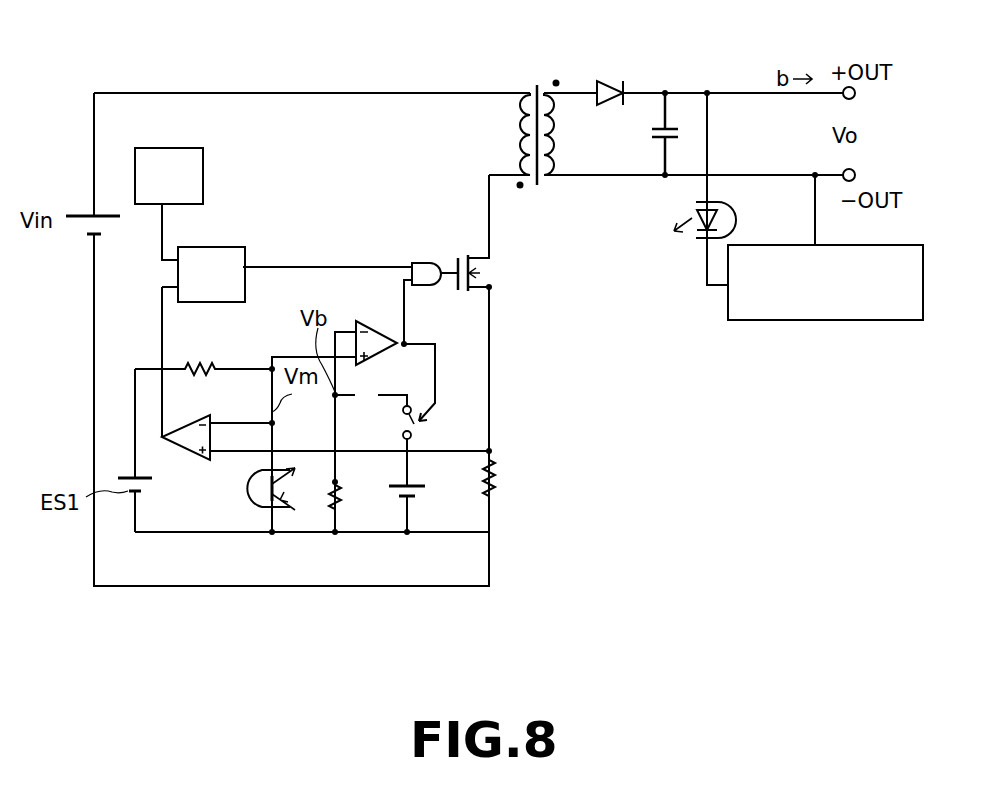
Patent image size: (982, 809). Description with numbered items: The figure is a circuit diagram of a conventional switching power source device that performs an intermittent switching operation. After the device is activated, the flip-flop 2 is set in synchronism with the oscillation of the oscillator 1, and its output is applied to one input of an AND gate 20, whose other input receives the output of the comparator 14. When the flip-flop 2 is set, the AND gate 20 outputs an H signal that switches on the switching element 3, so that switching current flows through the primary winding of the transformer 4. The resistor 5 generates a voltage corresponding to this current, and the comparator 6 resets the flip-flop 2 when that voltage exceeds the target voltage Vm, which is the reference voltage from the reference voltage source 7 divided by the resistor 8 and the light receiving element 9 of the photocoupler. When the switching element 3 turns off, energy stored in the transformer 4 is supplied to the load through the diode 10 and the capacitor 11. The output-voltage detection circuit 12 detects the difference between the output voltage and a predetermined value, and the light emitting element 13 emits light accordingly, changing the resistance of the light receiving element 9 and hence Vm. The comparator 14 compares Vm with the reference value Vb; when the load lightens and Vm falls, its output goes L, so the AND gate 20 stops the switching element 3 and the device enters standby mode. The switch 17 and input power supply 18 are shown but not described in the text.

The oscillator 1 is at (204, 165).
The flip-flop 2 is at (215, 247).
The switching element 3 is at (470, 257).
The transformer 4 is at (523, 92).
The resistor 5 is at (512, 491).
The comparator 6 is at (192, 456).
The reference voltage source 7 is at (124, 478).
The resistor 8 is at (202, 362).
The light receiving element 9 is at (258, 507).
The diode 10 is at (614, 86).
The capacitor 11 is at (676, 128).
The output-voltage detection circuit 12 is at (825, 322).
The light emitting element 13 is at (700, 245).
The comparator 14 is at (375, 330).
The switch 17 is at (413, 432).
The input power supply 18 is at (72, 213).
The AND gate 20 is at (418, 261).